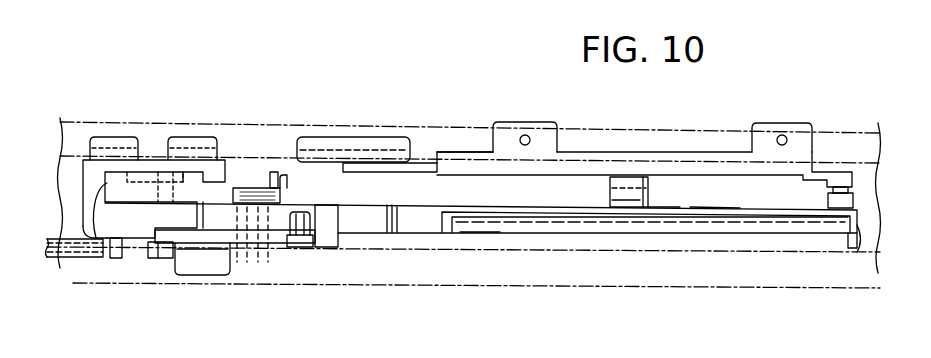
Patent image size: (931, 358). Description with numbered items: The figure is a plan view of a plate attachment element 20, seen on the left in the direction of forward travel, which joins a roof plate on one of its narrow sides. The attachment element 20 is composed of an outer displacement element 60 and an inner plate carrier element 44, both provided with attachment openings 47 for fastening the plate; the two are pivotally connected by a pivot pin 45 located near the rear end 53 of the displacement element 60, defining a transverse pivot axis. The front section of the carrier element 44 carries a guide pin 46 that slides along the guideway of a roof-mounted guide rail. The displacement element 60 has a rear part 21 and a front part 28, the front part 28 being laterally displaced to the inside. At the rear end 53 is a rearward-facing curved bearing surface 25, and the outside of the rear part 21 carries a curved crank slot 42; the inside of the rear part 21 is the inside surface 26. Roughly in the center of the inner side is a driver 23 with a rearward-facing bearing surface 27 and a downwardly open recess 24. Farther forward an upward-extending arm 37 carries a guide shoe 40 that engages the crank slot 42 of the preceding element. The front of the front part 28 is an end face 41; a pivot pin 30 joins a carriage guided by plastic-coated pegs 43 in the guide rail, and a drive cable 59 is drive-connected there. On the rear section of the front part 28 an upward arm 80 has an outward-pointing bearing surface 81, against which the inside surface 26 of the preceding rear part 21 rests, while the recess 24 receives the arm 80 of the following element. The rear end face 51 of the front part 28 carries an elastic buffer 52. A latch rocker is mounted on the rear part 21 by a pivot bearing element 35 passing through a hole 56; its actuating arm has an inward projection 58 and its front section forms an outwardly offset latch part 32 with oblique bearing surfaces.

The attachment element 20 is at (408, 97).
The rear part 21 is at (420, 220).
The driver 23 is at (628, 180).
The recess 24 is at (625, 200).
The curved bearing surface 25 is at (860, 232).
The inside surface 26 is at (712, 207).
The bearing surface 27 is at (660, 195).
The front part 28 is at (225, 192).
The pivot pin 30 is at (166, 175).
The latch part 32 is at (165, 258).
The pivot bearing element 35 is at (238, 262).
The arm 37 is at (312, 222).
The guide shoe 40 is at (330, 217).
The end face 41 is at (100, 258).
The crank slot 42 is at (713, 233).
The pegs 43 is at (112, 140).
The plate carrier element 44 is at (600, 165).
The pivot pin 45 is at (840, 187).
The guide pin 46 is at (352, 150).
The attachment openings 47 is at (527, 137).
The rear end face 51 is at (274, 172).
The buffer 52 is at (284, 178).
The rear end 53 is at (876, 236).
The hole 56 is at (247, 206).
The projection 58 is at (345, 218).
The drive cable 59 is at (75, 258).
The displacement element 60 is at (478, 243).
The arm 80 is at (263, 200).
The bearing surface 81 is at (288, 220).